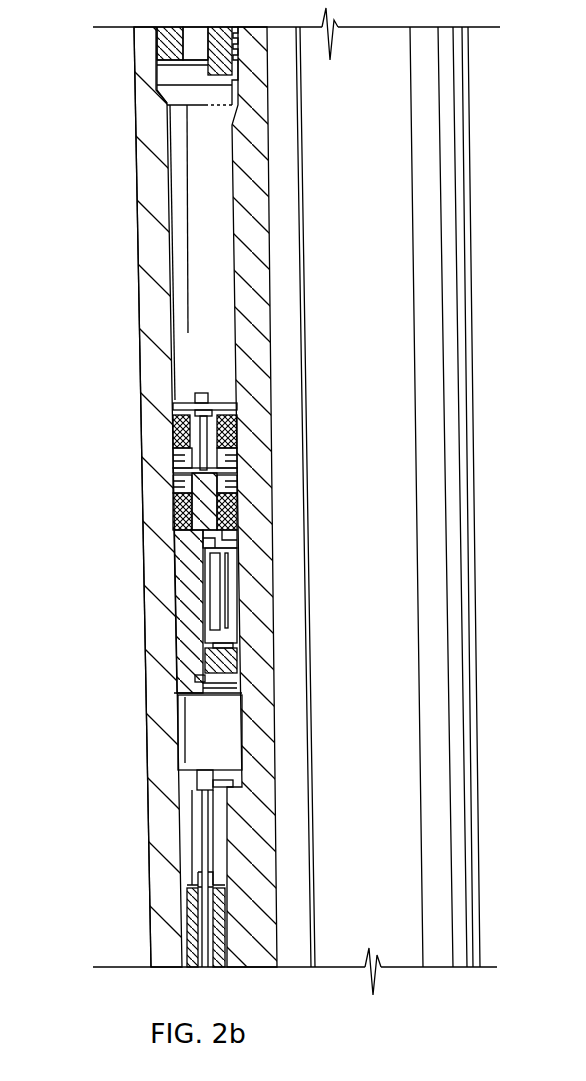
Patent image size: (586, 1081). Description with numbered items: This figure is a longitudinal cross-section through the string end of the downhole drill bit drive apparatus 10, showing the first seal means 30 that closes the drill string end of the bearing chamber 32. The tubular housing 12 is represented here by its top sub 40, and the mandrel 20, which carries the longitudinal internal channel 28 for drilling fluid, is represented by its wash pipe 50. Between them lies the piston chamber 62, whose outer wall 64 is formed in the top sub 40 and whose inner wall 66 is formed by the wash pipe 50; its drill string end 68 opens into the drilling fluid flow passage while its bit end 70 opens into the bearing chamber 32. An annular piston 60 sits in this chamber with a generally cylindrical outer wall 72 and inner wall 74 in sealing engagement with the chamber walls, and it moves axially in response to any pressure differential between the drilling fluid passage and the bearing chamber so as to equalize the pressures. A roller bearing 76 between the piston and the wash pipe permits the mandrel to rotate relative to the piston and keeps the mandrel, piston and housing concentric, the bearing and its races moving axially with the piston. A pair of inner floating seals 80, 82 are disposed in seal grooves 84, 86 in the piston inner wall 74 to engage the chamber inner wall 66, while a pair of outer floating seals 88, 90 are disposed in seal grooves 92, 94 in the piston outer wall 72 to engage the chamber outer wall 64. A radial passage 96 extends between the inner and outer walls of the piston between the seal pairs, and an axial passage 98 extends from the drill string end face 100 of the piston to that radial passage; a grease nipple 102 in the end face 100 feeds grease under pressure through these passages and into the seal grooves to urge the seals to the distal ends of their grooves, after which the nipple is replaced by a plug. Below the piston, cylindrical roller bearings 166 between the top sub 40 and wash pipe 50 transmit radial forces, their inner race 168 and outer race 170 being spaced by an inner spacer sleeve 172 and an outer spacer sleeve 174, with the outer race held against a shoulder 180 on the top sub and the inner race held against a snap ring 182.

The drill bit drive apparatus 10 is at (480, 391).
The tubular housing 12 is at (136, 214).
The mandrel 20 is at (228, 710).
The longitudinal internal channel 28 is at (283, 902).
The first seal means 30 is at (176, 560).
The bearing chamber 32 is at (196, 772).
The top sub 40 is at (137, 135).
The wash pipe 50 is at (248, 310).
The annular piston 60 is at (175, 635).
The piston chamber 62 is at (188, 167).
The piston chamber outer wall 64 is at (183, 245).
The piston chamber inner wall 66 is at (225, 270).
The drill string end of piston chamber 68 is at (188, 110).
The bit end of piston chamber 70 is at (190, 740).
The piston outer wall 72 is at (195, 598).
The piston inner wall 74 is at (240, 535).
The roller bearing 76 is at (225, 625).
The inner floating seal 80 is at (237, 428).
The inner floating seal 82 is at (240, 512).
The seal groove 84 is at (237, 455).
The seal groove 86 is at (237, 488).
The outer floating seal 88 is at (175, 440).
The outer floating seal 90 is at (200, 520).
The seal groove 92 is at (172, 453).
The seal groove 94 is at (175, 500).
The radial passage 96 is at (175, 480).
The axial passage 98 is at (237, 420).
The drill string end face 100 is at (185, 410).
The grease nipple 102 is at (200, 400).
The cylindrical roller bearing 166 is at (200, 808).
The inner race 168 is at (215, 840).
The outer race 170 is at (187, 830).
The inner spacer sleeve 172 is at (226, 945).
The outer spacer sleeve 174 is at (186, 936).
The shoulder 180 is at (186, 791).
The snap ring 182 is at (232, 784).